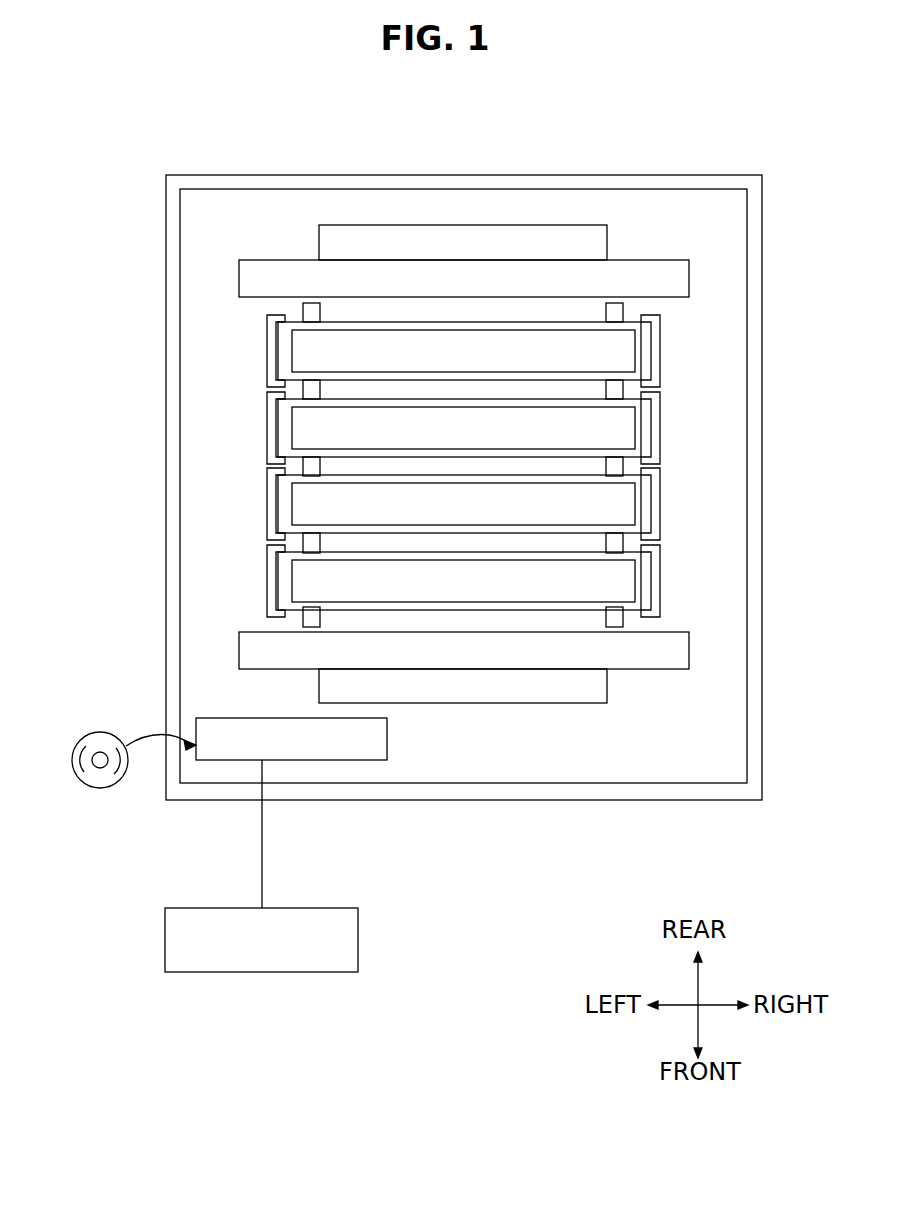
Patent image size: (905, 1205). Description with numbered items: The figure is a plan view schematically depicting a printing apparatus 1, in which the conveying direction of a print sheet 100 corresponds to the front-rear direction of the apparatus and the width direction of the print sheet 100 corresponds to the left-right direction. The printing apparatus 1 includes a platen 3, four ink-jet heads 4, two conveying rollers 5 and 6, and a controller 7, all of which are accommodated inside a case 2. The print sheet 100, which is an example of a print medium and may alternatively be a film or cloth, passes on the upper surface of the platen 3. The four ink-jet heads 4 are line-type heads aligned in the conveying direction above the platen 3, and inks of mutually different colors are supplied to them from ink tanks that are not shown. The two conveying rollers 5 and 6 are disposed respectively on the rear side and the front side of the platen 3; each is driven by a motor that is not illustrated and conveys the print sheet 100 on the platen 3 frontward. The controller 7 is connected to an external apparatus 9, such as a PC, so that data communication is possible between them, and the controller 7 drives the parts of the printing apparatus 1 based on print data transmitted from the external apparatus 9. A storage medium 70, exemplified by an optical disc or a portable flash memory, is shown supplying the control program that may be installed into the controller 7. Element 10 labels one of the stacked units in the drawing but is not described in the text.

The printing apparatus 1 is at (702, 148).
The case 2 is at (690, 800).
The platen 3 is at (284, 313).
The ink-jet head 4 is at (640, 318).
The conveying roller 5 is at (669, 260).
The conveying roller 6 is at (650, 669).
The controller 7 is at (259, 718).
The external apparatus 9 is at (266, 972).
The battery module 10 is at (644, 500).
The storage medium 70 is at (105, 736).
The print sheet 100 is at (608, 238).